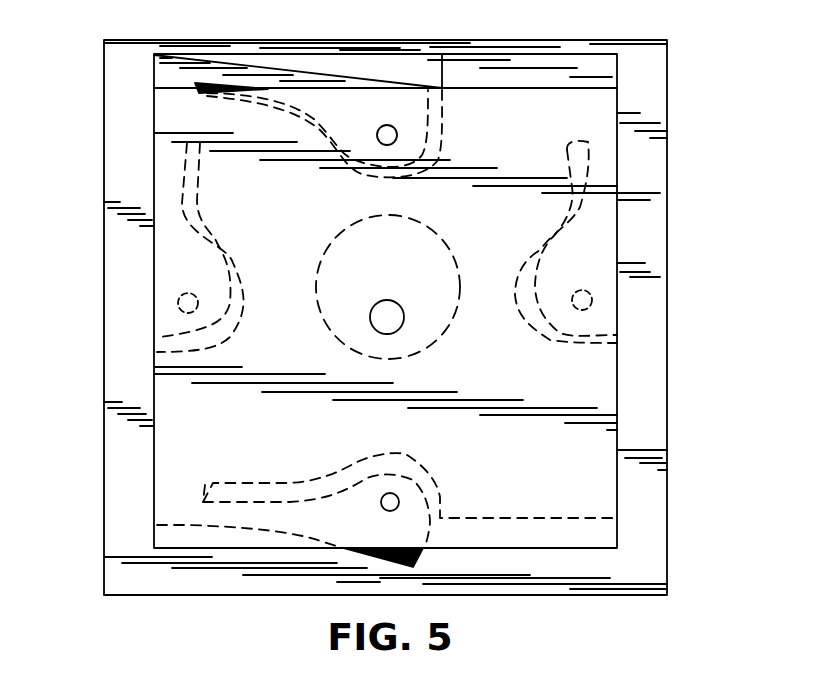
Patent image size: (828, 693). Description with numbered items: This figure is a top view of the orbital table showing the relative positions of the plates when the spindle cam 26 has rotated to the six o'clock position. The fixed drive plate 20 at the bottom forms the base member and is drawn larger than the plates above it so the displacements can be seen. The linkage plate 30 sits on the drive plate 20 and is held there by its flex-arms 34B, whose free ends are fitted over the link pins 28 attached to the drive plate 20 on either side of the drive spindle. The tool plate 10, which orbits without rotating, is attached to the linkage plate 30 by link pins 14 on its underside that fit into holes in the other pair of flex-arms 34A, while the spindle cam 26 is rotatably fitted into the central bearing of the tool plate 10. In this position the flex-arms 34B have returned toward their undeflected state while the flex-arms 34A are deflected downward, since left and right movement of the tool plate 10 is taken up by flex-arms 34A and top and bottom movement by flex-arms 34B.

The tool plate 10 is at (598, 462).
The link pins 14 is at (380, 128).
The drive plate 20 is at (668, 108).
The spindle cam 26 is at (388, 306).
The link pins 28 is at (232, 322).
The linkage plate 30 is at (578, 64).
The flex-arms 34A is at (305, 76).
The flex-arms 34B is at (178, 304).